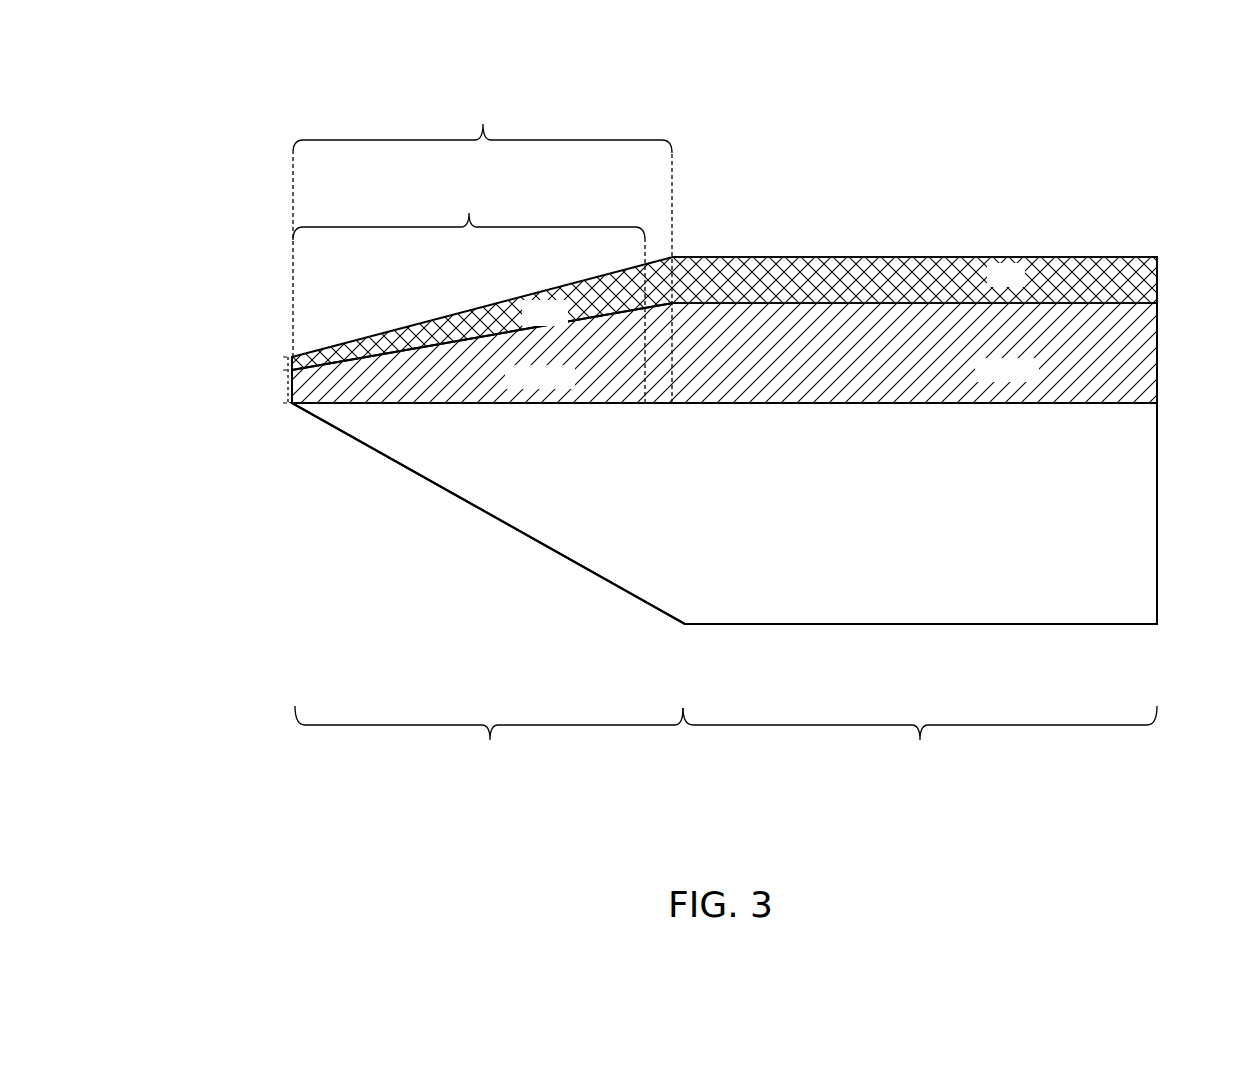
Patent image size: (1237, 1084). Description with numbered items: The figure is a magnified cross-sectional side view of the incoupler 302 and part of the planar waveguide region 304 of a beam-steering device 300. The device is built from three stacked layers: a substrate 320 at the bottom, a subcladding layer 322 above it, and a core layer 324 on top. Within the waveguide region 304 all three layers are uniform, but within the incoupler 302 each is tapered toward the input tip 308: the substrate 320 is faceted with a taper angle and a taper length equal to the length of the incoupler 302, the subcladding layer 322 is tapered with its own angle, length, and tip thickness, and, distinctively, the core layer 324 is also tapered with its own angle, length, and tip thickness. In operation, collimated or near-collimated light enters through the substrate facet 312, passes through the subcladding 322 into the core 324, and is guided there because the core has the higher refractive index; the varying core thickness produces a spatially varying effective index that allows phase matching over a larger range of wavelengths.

The beam-steering device 300 is at (712, 463).
The incoupler 302 is at (489, 756).
The planar waveguide region 304 is at (920, 740).
The input tip 308 is at (282, 412).
The substrate facet 312 is at (505, 540).
The substrate 320 is at (1142, 523).
The subcladding layer 322 is at (1133, 348).
The core layer 324 is at (1143, 283).